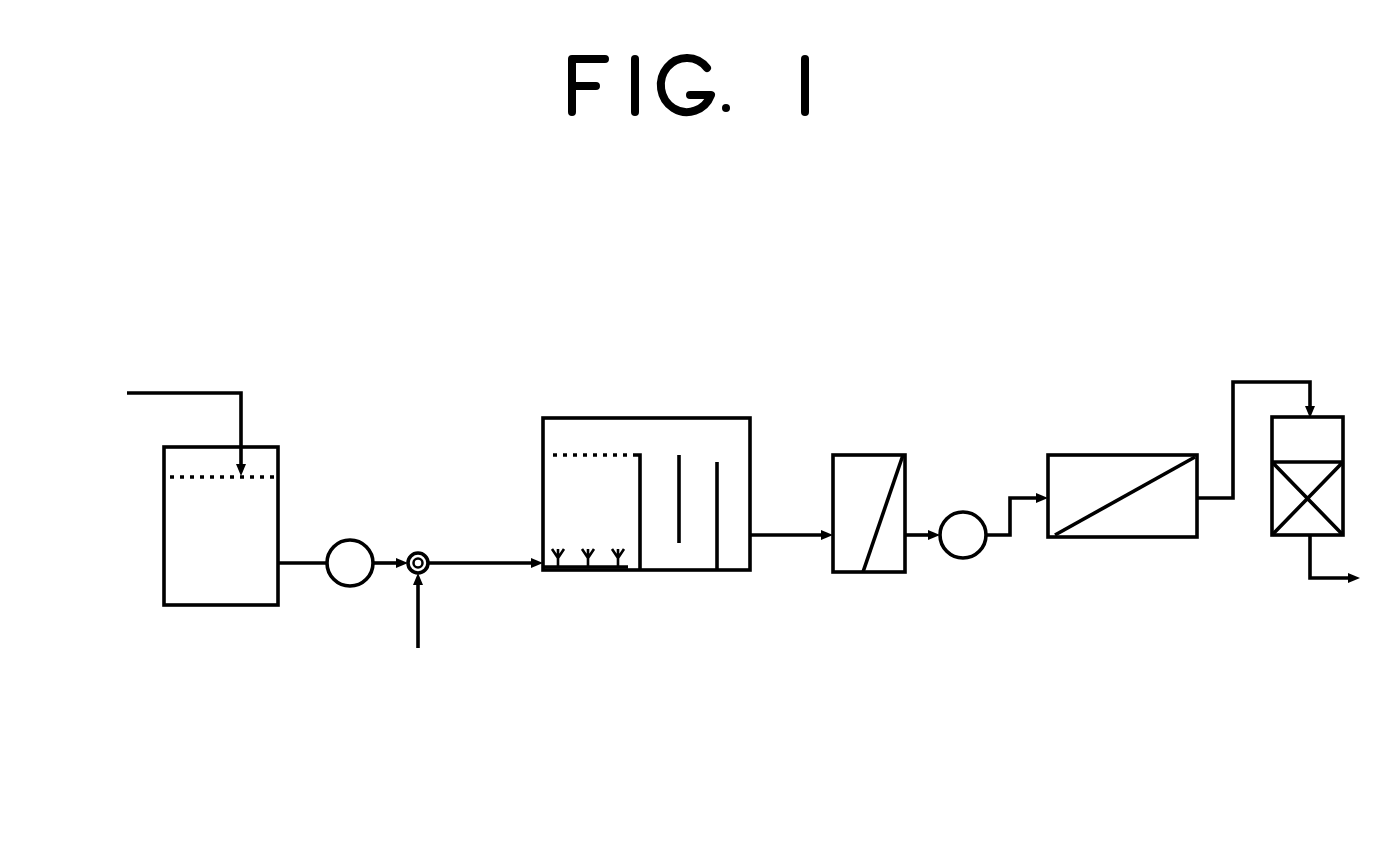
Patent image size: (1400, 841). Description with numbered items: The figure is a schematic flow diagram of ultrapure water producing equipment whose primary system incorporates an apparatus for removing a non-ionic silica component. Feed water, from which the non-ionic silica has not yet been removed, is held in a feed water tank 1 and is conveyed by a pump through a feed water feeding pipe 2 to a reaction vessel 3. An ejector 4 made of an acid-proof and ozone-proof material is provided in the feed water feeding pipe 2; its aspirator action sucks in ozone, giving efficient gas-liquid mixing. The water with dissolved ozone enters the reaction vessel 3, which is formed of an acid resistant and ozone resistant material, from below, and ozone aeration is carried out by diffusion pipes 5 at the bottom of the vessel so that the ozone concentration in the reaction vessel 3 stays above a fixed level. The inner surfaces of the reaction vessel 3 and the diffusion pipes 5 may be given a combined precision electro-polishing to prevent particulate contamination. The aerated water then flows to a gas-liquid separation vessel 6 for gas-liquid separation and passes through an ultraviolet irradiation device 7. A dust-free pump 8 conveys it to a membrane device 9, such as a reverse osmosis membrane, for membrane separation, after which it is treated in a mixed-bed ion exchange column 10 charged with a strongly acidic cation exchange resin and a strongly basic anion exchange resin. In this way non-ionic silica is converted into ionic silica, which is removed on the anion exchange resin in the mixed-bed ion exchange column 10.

The feed water tank 1 is at (213, 607).
The feed water feeding pipe 2 is at (308, 563).
The reaction vessel 3 is at (605, 472).
The ejector 4 is at (418, 552).
The diffusion pipes 5 is at (605, 572).
The gas-liquid separation vessel 6 is at (698, 462).
The ultraviolet irradiation device 7 is at (883, 455).
The dust-free pump 8 is at (978, 556).
The membrane device 9 is at (1103, 457).
The mixed-bed ion exchange column 10 is at (1340, 418).